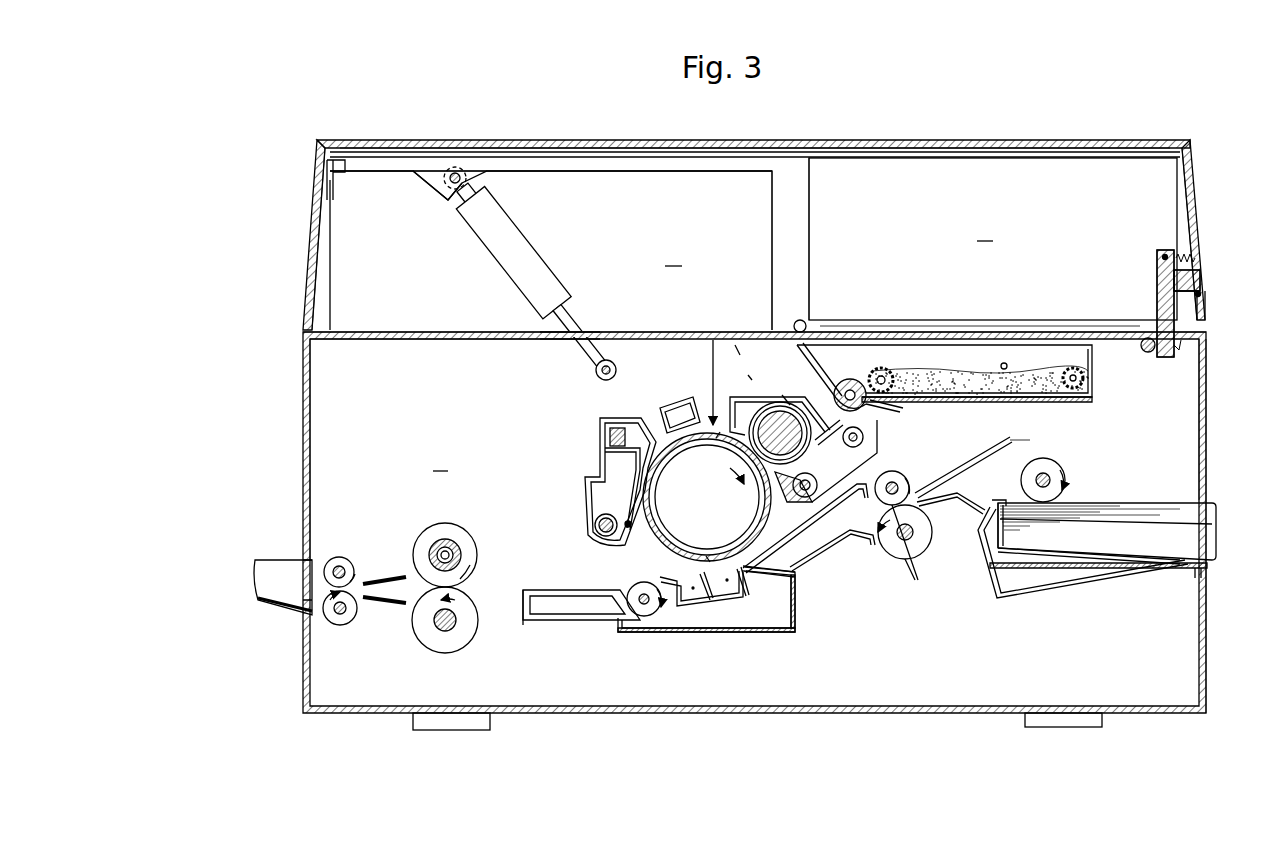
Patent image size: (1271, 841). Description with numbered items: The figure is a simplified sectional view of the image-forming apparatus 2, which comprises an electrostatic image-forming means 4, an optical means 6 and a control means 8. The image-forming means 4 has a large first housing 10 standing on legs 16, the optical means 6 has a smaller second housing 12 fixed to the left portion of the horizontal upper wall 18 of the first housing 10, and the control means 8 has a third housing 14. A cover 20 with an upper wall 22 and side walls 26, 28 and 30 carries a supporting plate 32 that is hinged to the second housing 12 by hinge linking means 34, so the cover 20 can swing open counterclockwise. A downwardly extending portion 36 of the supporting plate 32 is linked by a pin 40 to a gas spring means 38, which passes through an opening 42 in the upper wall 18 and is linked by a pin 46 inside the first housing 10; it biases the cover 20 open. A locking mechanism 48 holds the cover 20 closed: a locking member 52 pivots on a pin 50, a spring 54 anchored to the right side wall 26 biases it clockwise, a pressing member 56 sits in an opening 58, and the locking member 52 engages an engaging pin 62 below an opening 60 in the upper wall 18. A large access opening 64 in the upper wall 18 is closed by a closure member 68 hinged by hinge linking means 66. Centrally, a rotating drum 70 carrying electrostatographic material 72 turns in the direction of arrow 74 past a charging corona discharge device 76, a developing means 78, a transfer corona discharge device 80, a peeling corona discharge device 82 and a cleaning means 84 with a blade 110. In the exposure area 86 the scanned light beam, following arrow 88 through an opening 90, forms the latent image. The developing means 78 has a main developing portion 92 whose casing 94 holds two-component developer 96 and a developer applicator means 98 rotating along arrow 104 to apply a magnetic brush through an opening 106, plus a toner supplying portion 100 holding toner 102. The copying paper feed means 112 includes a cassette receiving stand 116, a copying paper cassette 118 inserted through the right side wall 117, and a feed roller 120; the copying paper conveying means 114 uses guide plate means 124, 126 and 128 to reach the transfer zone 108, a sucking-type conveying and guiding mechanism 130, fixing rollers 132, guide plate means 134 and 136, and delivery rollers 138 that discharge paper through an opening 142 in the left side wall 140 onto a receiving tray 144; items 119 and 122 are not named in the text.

The image-forming apparatus 2 is at (270, 357).
The electrostatic image-forming means 4 is at (440, 460).
The optical means 6 is at (551, 250).
The control means 8 is at (993, 239).
The first housing 10 is at (302, 444).
The second housing 12 is at (692, 166).
The third housing 14 is at (804, 210).
The legs 16 is at (480, 731).
The upper wall 18 is at (498, 342).
The cover 20 is at (1084, 126).
The upper wall 22 is at (886, 142).
The right side wall 26 is at (1199, 206).
The side wall 28 is at (310, 260).
The side wall 30 is at (798, 258).
The supporting plate 32 is at (622, 172).
The hinge linking means 34 is at (334, 152).
The downwardly extending portion 36 is at (441, 186).
The gas spring means 38 is at (506, 272).
The pin 40 is at (454, 168).
The opening 42 is at (553, 342).
The pin 46 is at (598, 378).
The locking mechanism 48 is at (1130, 272).
The pin 50 is at (1156, 306).
The locking member 52 is at (1158, 246).
The spring 54 is at (1176, 258).
The pressing member 56 is at (1200, 276).
The opening 58 is at (1201, 294).
The opening 60 is at (1146, 352).
The engaging pin 62 is at (1174, 356).
The opening 64 is at (1054, 326).
The hinge linking means 66 is at (797, 320).
The closure member 68 is at (934, 326).
The rotating drum 70 is at (650, 549).
The electrostatographic material 72 is at (776, 512).
The arrow 74 is at (732, 468).
The charging corona discharge device 76 is at (666, 408).
The developing means 78 is at (750, 374).
The transfer corona discharge device 80 is at (746, 590).
The peeling corona discharge device 82 is at (688, 634).
The cleaning means 84 is at (584, 498).
The exposure area 86 is at (716, 440).
The arrow 88 is at (732, 342).
The opening 90 is at (700, 340).
The main developing portion 92 is at (762, 338).
The casing 94 is at (833, 502).
The two-component developer 96 is at (880, 472).
The developer applicator means 98 is at (786, 400).
The toner supplying portion 100 is at (958, 400).
The toner 102 is at (1003, 388).
The arrow 104 is at (704, 392).
The opening 106 is at (808, 498).
The transfer zone 108 is at (708, 556).
The blade 110 is at (618, 478).
The copying paper feed means 112 is at (1060, 604).
The copying paper conveying means 114 is at (856, 582).
The cassette receiving stand 116 is at (1000, 598).
The right side wall 117 is at (1207, 440).
The copying paper cassette 118 is at (1132, 504).
The exit opening 119 is at (1207, 490).
The feed roller 120 is at (1046, 458).
The fuser roller pair 122 is at (912, 555).
The guide plate means 124 is at (872, 548).
The guide plate means 126 is at (796, 568).
The guide plate means 128 is at (798, 604).
The sucking-type conveying and guiding mechanism 130 is at (563, 584).
The fixing rollers 132 is at (478, 565).
The guide plate means 134 is at (385, 576).
The guide plate means 136 is at (386, 604).
The delivery rollers 138 is at (345, 622).
The left side wall 140 is at (302, 490).
The opening 142 is at (303, 558).
The receiving tray 144 is at (276, 608).